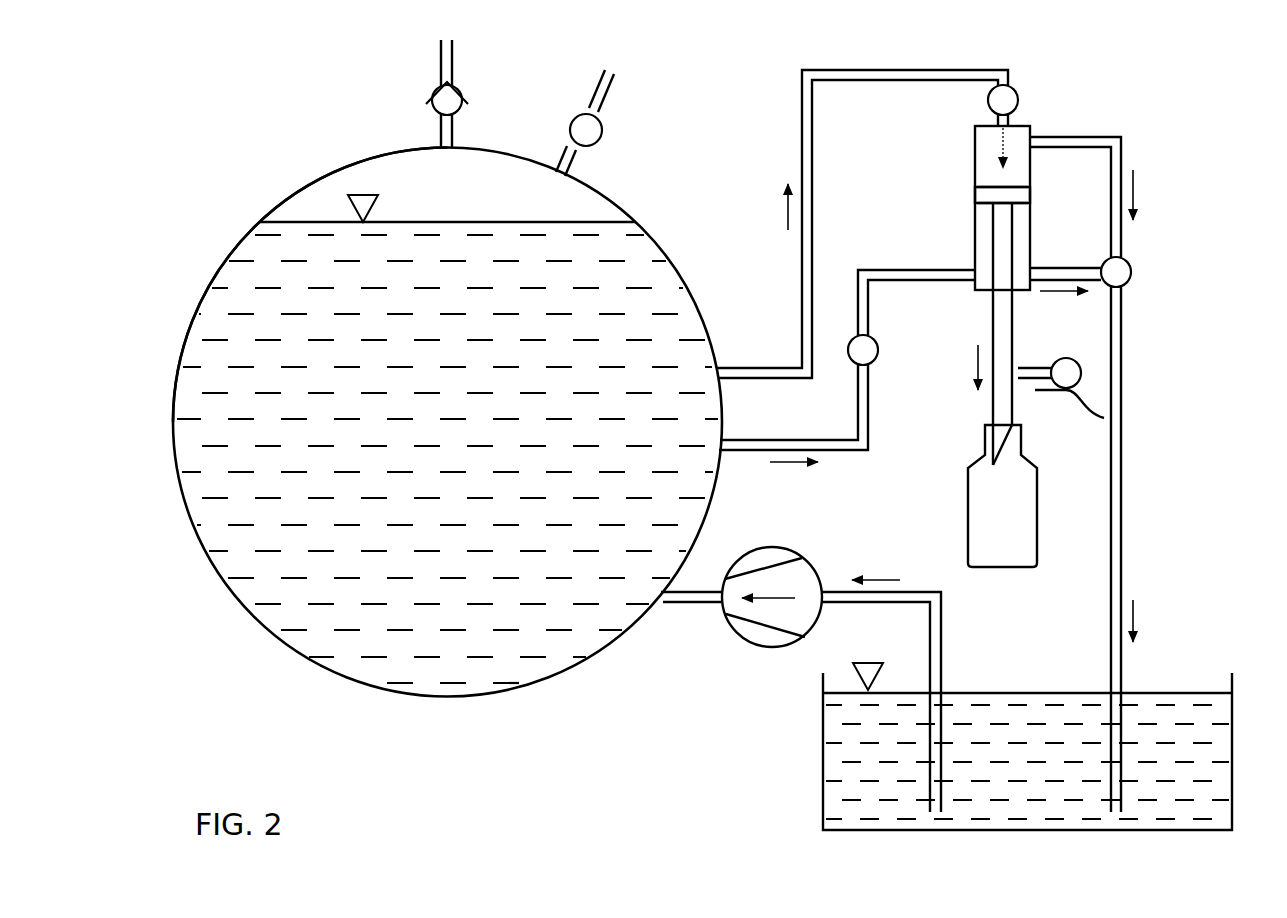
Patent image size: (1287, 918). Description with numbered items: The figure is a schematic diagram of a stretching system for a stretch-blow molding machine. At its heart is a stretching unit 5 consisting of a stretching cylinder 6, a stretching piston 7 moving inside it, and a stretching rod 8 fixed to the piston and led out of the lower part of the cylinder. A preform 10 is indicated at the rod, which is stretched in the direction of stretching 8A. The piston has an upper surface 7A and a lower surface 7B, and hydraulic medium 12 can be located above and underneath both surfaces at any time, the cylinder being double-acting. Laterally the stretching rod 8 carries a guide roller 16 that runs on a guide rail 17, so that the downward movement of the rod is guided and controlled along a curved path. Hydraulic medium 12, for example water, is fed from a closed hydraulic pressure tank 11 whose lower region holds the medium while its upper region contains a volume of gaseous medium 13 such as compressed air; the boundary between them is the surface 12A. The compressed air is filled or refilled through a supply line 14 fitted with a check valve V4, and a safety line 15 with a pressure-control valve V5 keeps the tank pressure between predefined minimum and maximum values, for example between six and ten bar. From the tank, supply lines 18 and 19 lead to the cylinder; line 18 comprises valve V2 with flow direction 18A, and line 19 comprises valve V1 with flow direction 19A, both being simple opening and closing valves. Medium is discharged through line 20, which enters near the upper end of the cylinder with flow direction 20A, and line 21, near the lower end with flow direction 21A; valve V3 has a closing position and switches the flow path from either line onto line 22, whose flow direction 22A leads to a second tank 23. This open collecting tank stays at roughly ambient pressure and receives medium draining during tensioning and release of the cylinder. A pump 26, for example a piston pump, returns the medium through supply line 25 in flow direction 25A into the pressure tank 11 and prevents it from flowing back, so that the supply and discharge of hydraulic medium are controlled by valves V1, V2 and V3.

The stretching unit 5 is at (1047, 73).
The stretching cylinder 6 is at (975, 150).
The stretching piston 7 is at (975, 195).
The upper surface of the stretching piston 7A is at (1022, 185).
The lower surface of the stretching piston 7B is at (975, 214).
The stretching rod 8 is at (993, 312).
The direction of stretching 8A is at (963, 367).
The preform 10 is at (1038, 548).
The hydraulic pressure tank 11 is at (396, 157).
The hydraulic medium 12 is at (249, 612).
The surface of the hydraulic medium 12A is at (349, 210).
The gaseous medium 13 is at (346, 176).
The supply line for compressed air 14 is at (455, 47).
The safety line 15 is at (592, 100).
The guide roller 16 is at (1066, 358).
The guide rail 17 is at (1087, 425).
The supply line 18 is at (858, 70).
The direction of flow in line 18 18A is at (768, 207).
The supply line 19 is at (850, 452).
The direction of flow in line 19 19A is at (793, 476).
The discharge line 20 is at (1100, 130).
The direction of flow in line 20 20A is at (1158, 195).
The discharge line 21 is at (1060, 268).
The direction of flow in line 21 21A is at (1064, 305).
The discharge line 22 is at (1122, 482).
The direction of flow in line 22 22A is at (1157, 621).
The second tank 23 is at (823, 812).
The supply line 25 is at (926, 592).
The direction of flow in line 25 25A is at (881, 567).
The pump 26 is at (742, 642).
The valve V1 is at (879, 350).
The valve V2 is at (1019, 105).
The valve V3 is at (1132, 272).
The check valve V4 is at (468, 98).
The pressure-control valve V5 is at (605, 134).